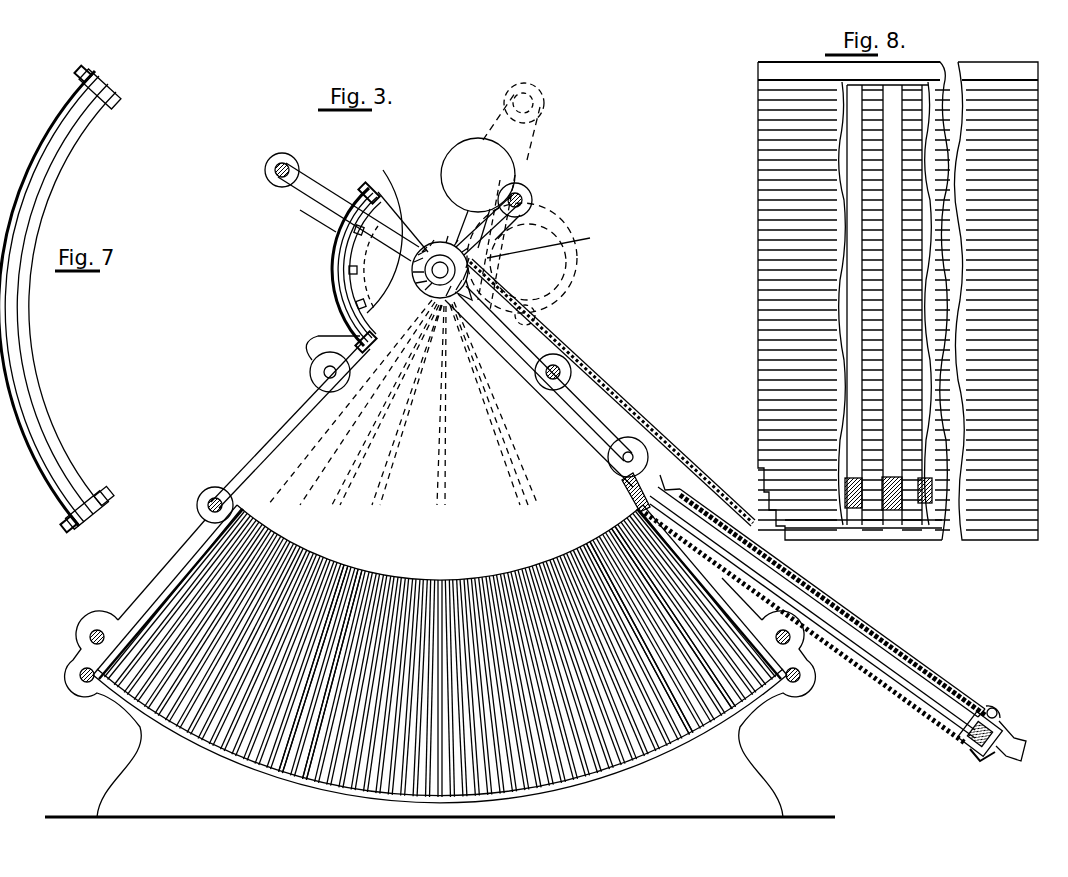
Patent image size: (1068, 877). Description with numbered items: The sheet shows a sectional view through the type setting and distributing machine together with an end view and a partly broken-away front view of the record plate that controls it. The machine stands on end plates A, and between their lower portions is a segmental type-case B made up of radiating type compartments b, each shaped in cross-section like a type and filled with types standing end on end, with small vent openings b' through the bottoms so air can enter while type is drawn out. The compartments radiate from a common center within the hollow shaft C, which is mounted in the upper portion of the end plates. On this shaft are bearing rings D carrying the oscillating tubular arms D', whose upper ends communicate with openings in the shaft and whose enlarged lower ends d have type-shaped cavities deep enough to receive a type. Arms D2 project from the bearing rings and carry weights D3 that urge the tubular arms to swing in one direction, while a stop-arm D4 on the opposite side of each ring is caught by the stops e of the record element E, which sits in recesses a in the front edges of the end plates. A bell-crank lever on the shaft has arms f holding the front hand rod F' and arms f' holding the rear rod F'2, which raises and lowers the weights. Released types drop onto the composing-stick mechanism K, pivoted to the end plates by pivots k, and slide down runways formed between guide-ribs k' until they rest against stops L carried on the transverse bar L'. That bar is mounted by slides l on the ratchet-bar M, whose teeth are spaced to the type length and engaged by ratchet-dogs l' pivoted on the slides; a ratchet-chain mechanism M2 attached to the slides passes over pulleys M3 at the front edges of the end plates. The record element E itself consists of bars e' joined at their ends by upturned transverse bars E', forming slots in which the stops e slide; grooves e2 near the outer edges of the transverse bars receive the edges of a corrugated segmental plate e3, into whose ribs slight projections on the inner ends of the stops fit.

In FIG. 3, the end plates A is at (403, 402).
In FIG. 3, the type-cases B is at (327, 555).
In FIG. 3, the type compartments b is at (466, 672).
In FIG. 3, the vent openings b' is at (467, 663).
In FIG. 3, the hollow shaft C is at (590, 238).
In FIG. 3, the bearing rings D is at (443, 264).
In FIG. 3, the tubular arms D' is at (545, 373).
In FIG. 3, the arms D2 is at (466, 228).
In FIG. 3, the weights D3 is at (446, 165).
In FIG. 3, the stop-arm D4 is at (425, 308).
In FIG. 3, the record element E is at (351, 258).
In FIG. 7, the record element E is at (58, 298).
In FIG. 8, the record element E is at (873, 301).
In FIG. 7, the transverse bars E' is at (113, 296).
In FIG. 8, the transverse bars E' is at (838, 317).
In FIG. 3, the stops e is at (379, 262).
In FIG. 7, the stops e is at (119, 481).
In FIG. 8, the stops e is at (901, 482).
In FIG. 7, the bars e' is at (62, 299).
In FIG. 8, the bars e' is at (885, 303).
In FIG. 7, the grooves e2 is at (95, 76).
In FIG. 7, the corrugated segmental plate e3 is at (21, 392).
In FIG. 3, the hand rod F' is at (342, 199).
In FIG. 3, the rod F'2 is at (527, 211).
In FIG. 3, the arms f is at (318, 209).
In FIG. 3, the arms f' is at (504, 227).
In FIG. 3, the composing-stick mechanism K is at (852, 672).
In FIG. 3, the pivots k is at (628, 447).
In FIG. 3, the guide-ribs k' is at (805, 628).
In FIG. 3, the stops L is at (957, 734).
In FIG. 3, the transverse bar L' is at (958, 762).
In FIG. 3, the slides l is at (993, 698).
In FIG. 3, the ratchet-dogs l' is at (1011, 721).
In FIG. 3, the ratchet-bar M is at (900, 658).
In FIG. 3, the ratchet-chain mechanism M2 is at (320, 338).
In FIG. 3, the pulleys M3 is at (306, 364).
In FIG. 3, the recesses a is at (376, 190).
In FIG. 3, the lower ends d is at (635, 490).